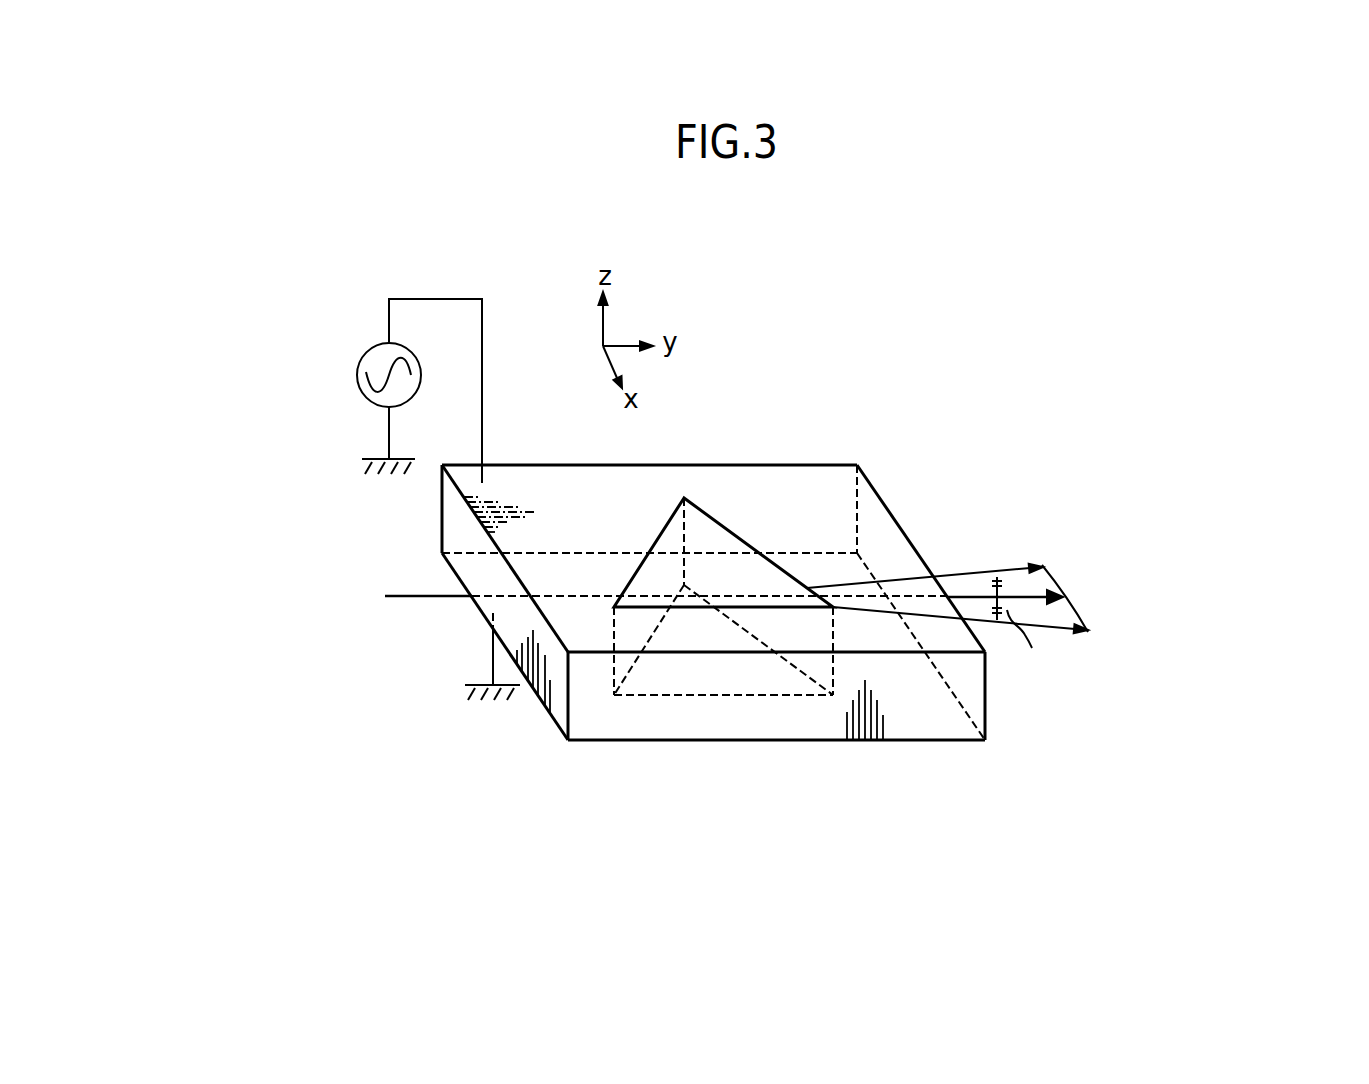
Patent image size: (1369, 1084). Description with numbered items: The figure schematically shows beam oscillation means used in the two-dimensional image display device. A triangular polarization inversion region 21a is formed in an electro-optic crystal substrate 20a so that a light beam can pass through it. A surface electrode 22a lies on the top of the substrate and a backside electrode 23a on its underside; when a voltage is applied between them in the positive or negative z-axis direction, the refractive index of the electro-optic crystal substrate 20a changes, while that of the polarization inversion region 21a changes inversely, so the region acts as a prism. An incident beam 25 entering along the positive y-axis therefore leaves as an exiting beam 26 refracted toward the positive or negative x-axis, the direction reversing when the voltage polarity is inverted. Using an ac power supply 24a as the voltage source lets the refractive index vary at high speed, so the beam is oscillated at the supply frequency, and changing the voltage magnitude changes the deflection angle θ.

The electro-optic crystal substrate 20a is at (898, 715).
The polarization inversion region 21a is at (702, 540).
The surface electrode 22a is at (823, 483).
The backside electrode 23a is at (608, 720).
The ac power supply 24a is at (373, 345).
The incident beam 25 is at (412, 595).
The exiting beam 26 is at (1048, 570).